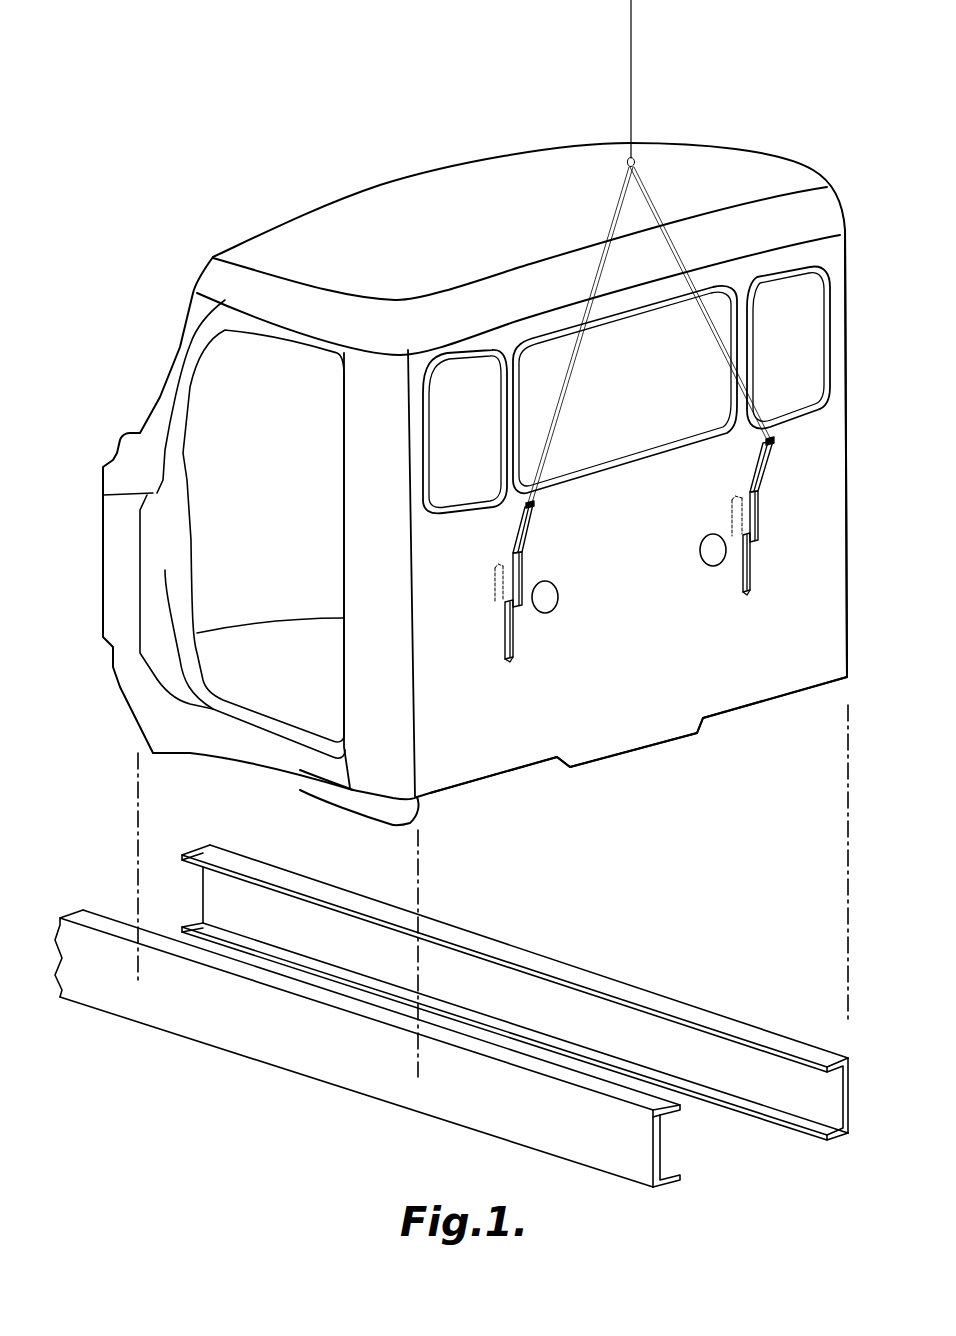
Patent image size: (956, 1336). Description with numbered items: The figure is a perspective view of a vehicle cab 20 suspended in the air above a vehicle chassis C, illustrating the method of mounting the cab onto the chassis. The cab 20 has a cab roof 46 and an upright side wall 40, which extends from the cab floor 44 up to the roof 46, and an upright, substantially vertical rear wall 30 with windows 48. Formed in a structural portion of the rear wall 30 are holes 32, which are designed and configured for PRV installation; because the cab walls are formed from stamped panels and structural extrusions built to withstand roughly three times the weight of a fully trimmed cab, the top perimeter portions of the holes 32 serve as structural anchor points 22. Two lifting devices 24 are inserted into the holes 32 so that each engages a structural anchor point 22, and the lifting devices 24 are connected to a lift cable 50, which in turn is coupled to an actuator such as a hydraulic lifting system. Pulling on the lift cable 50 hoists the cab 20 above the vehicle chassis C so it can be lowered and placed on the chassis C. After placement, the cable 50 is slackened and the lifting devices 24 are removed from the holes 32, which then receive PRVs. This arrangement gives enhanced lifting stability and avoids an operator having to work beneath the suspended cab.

The vehicle cab 20 is at (452, 165).
The cab roof 46 is at (348, 222).
The lift cable 50 is at (598, 276).
The windows 48 is at (464, 510).
The lifting device 24 is at (530, 526).
The structural anchor point 22 is at (500, 596).
The holes 32 is at (513, 634).
The rear wall 30 is at (633, 675).
The side wall 40 is at (152, 670).
The cab floor 44 is at (287, 703).
The vehicle chassis C is at (210, 1036).